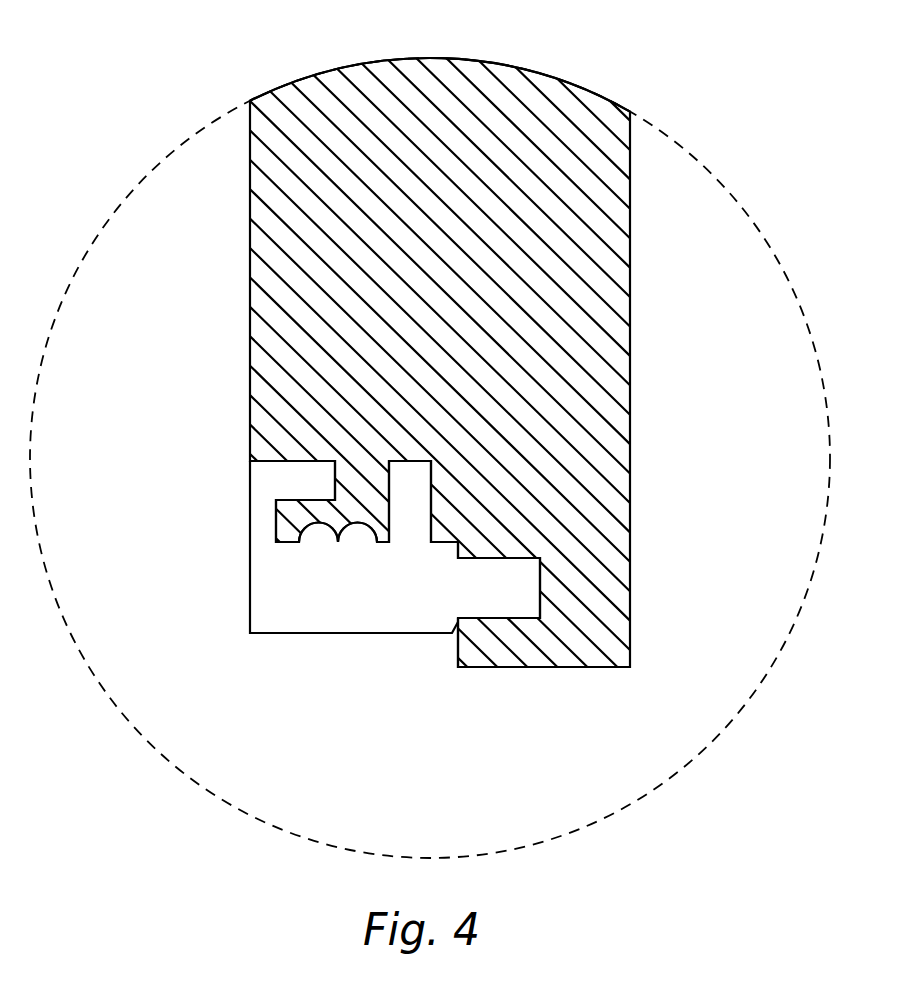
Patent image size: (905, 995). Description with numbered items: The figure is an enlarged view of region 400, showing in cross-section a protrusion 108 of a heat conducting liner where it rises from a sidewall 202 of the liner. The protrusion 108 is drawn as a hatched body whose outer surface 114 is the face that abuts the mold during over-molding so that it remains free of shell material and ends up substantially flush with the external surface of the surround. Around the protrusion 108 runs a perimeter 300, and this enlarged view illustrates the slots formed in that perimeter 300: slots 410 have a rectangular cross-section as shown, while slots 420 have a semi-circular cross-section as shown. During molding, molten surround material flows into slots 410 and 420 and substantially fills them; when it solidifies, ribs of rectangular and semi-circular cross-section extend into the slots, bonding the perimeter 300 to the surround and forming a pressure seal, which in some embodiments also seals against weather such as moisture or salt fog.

The protrusion 108 is at (398, 67).
The surface 114 is at (252, 373).
The sidewall 202 is at (552, 670).
The perimeter 300 is at (352, 633).
The region 400 is at (692, 150).
The slots 410 is at (277, 480).
The slots 420 is at (357, 535).